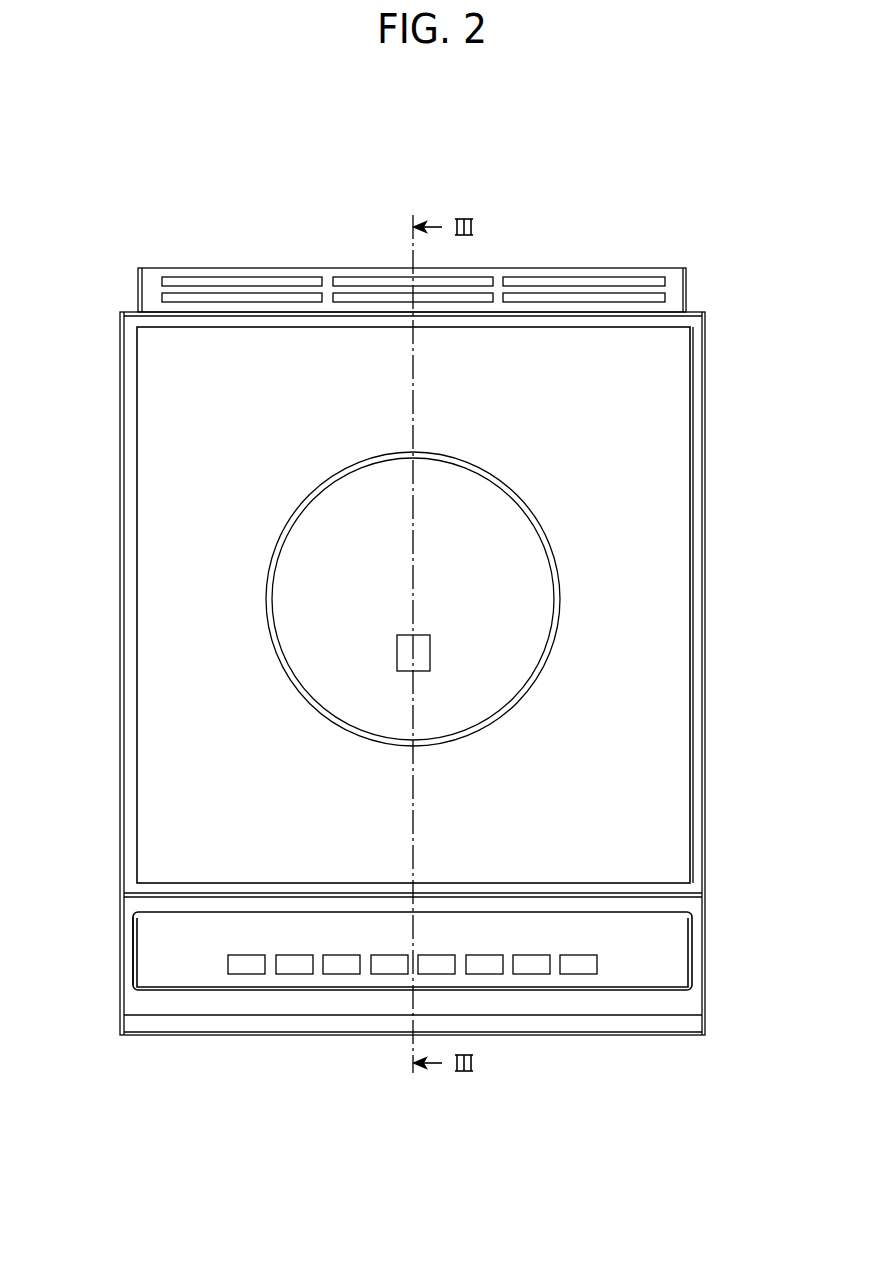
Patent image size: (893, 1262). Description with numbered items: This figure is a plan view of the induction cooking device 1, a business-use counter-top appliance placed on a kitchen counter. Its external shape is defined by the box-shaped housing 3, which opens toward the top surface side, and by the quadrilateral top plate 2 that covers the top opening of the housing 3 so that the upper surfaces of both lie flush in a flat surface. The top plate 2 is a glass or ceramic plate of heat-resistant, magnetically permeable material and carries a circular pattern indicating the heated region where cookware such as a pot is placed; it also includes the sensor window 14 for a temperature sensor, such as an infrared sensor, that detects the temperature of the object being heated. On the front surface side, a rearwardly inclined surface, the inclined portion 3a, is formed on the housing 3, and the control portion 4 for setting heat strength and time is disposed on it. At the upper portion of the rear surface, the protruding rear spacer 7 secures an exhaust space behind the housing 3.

The induction cooking device 1 is at (661, 229).
The top plate 2 is at (673, 395).
The housing 3 is at (705, 607).
The inclined portion 3a is at (130, 968).
The control portion 4 is at (675, 947).
The rear spacer 7 is at (673, 296).
The sensor window 14 is at (423, 652).